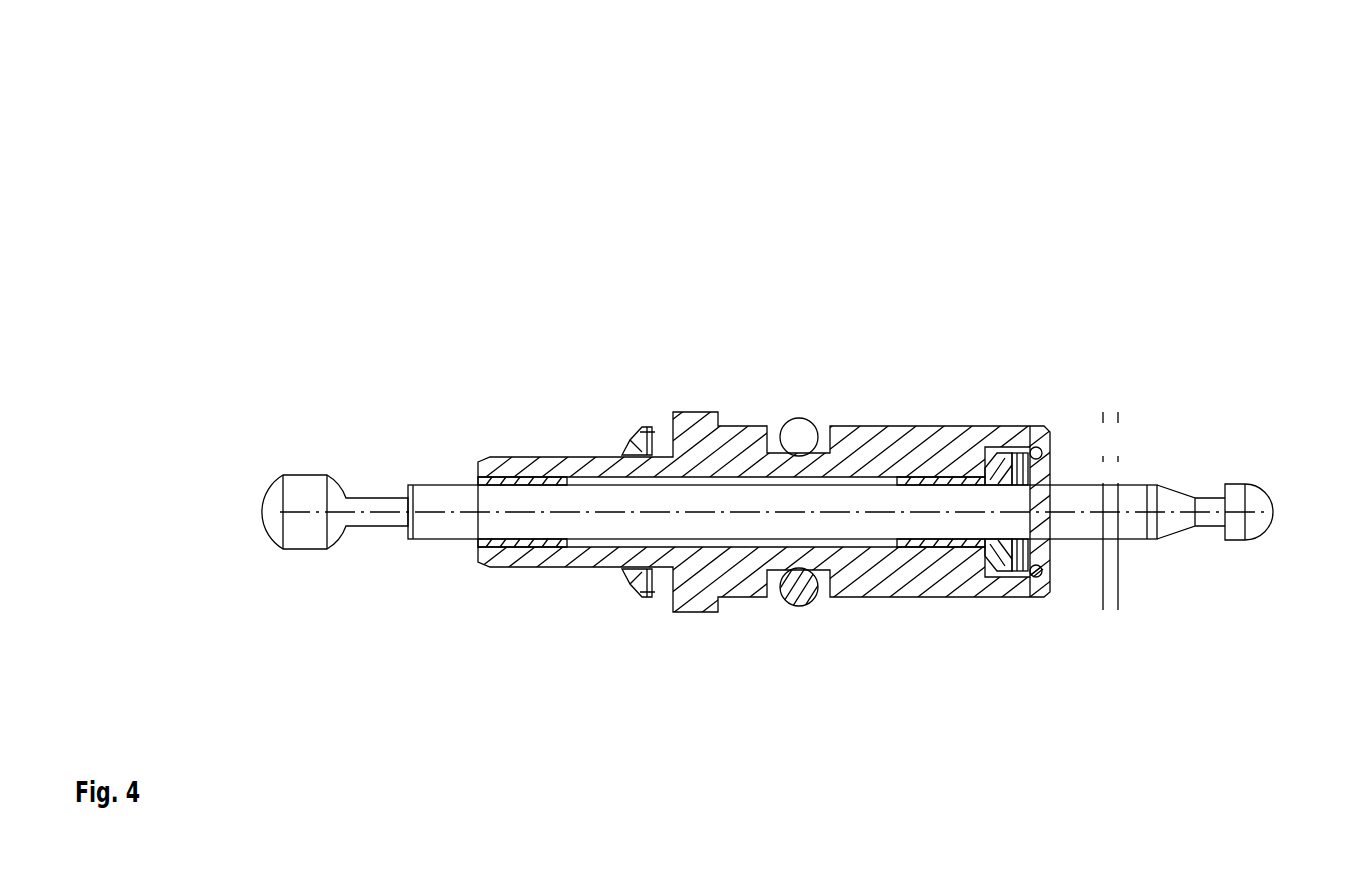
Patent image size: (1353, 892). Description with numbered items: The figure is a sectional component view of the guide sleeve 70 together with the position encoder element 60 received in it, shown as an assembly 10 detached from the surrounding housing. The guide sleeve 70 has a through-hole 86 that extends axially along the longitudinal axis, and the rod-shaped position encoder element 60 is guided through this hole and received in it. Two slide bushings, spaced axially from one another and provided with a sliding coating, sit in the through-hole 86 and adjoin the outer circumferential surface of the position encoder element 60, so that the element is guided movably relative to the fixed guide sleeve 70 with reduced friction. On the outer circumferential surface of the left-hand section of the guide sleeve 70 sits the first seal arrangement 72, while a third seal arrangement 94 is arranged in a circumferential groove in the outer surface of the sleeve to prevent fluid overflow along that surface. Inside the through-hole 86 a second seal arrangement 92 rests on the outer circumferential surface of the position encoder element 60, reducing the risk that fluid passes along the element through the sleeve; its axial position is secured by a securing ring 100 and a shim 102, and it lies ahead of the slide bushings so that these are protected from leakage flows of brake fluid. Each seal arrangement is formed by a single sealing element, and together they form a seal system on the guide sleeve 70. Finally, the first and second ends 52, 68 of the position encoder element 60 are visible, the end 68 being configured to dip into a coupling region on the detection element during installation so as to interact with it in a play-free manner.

The actuator assembly 10 is at (1041, 139).
The first end 52 is at (1253, 505).
The position encoder element 60 is at (1127, 530).
The second end 68 is at (305, 498).
The guide sleeve 70 is at (872, 560).
The first seal arrangement 72 is at (632, 430).
The through-hole 86 is at (608, 545).
The second seal arrangement 92 is at (990, 452).
The third seal arrangement 94 is at (799, 430).
The securing ring 100 is at (1036, 577).
The shim 102 is at (1020, 573).